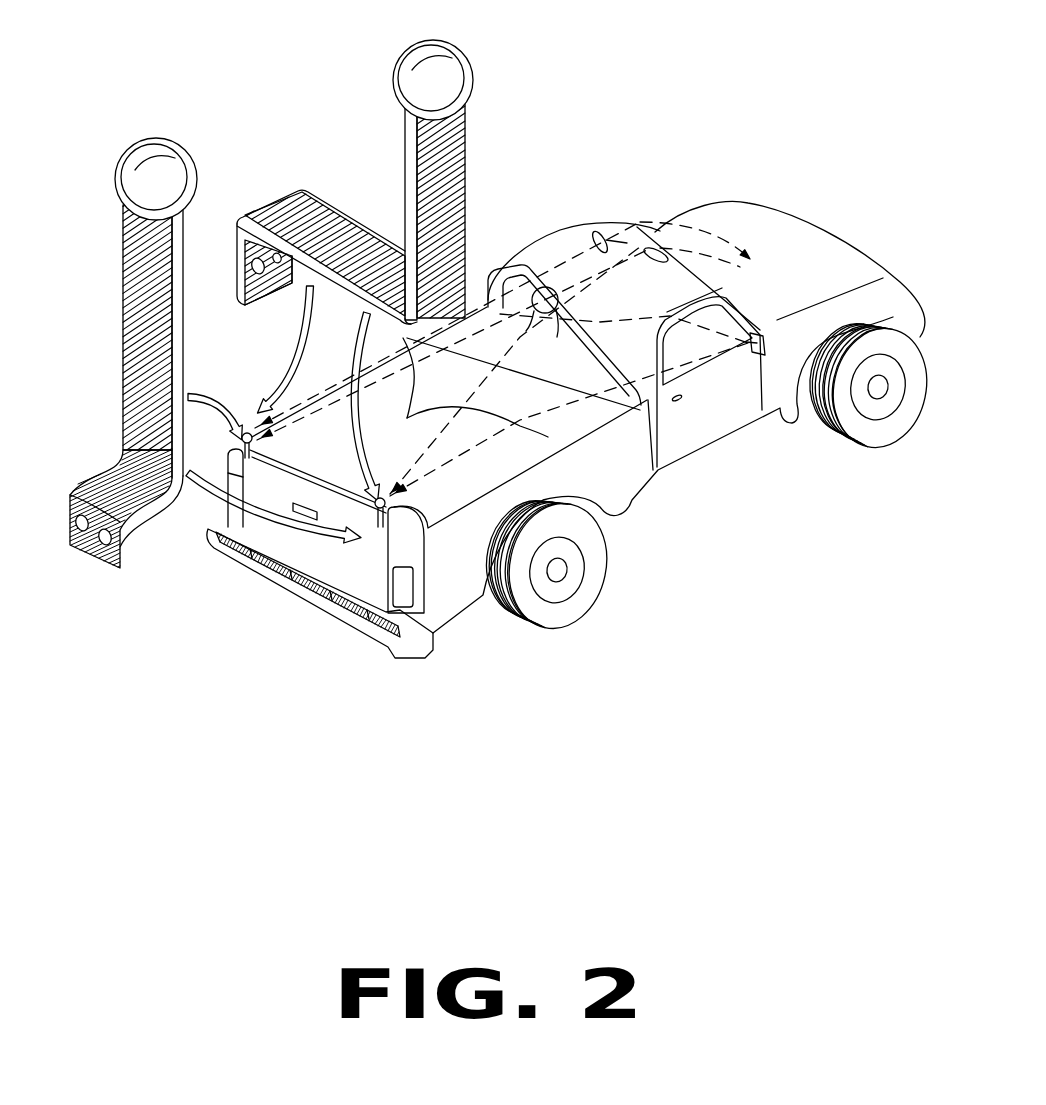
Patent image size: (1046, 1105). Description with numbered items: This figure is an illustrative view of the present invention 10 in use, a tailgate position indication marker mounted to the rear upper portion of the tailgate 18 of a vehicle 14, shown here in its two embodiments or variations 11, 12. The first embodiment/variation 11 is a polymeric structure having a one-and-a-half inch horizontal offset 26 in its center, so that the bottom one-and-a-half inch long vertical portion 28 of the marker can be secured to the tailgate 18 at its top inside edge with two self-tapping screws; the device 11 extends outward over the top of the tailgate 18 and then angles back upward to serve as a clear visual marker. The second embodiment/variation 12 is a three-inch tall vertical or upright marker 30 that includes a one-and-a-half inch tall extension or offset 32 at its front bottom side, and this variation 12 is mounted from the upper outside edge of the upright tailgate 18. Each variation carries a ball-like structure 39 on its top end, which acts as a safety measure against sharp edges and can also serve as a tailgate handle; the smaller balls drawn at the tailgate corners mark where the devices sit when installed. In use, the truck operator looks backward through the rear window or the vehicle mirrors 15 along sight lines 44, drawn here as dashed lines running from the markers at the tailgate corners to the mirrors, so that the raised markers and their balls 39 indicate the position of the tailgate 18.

The present invention 10 is at (398, 127).
The first embodiment/variation 11 is at (471, 82).
The second embodiment/variation 12 is at (170, 167).
The vehicle 14 is at (538, 250).
The vehicle mirrors 15 is at (758, 332).
The tailgate 18 is at (327, 553).
The horizontal offset 26 is at (342, 223).
The vertical portion 28 is at (237, 273).
The upright marker 30 is at (122, 417).
The extension or offset 32 is at (128, 552).
The ball-like structure 39 is at (392, 83).
The sight lines 44 is at (503, 396).